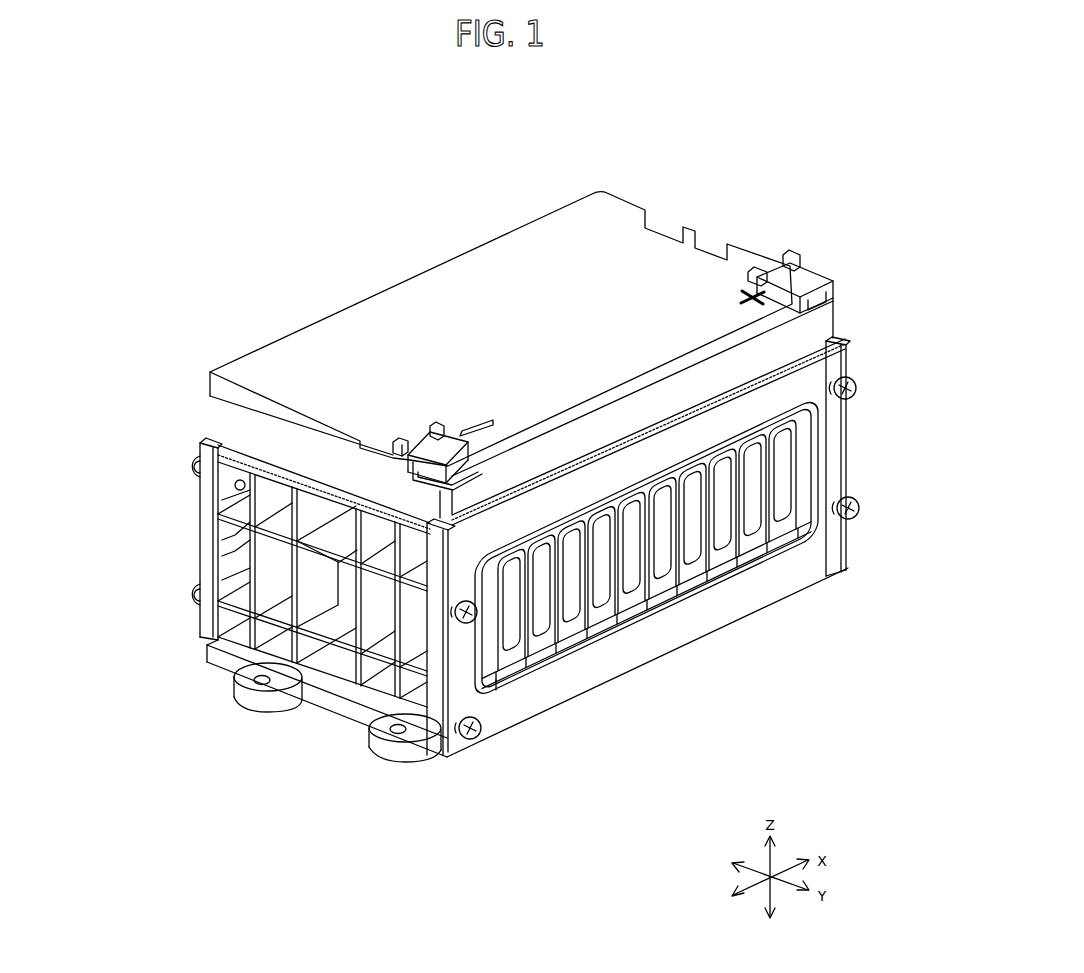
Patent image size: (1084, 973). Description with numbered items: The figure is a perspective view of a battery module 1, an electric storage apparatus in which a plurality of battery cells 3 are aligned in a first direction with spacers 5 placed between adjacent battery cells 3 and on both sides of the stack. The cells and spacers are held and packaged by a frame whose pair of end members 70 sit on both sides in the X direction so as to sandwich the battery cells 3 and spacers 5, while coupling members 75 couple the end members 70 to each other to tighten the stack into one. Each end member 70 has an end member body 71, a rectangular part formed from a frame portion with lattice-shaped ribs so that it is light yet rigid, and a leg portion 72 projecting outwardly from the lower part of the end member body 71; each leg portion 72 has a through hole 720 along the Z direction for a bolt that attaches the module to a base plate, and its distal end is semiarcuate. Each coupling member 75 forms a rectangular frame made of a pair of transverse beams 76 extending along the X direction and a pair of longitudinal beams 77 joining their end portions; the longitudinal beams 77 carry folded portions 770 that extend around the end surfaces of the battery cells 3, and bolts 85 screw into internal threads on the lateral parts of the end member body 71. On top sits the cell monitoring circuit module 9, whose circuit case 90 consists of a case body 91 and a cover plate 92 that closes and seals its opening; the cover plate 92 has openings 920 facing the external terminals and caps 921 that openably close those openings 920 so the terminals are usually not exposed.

The battery module 1 is at (685, 139).
The cell monitoring circuit module 9 is at (512, 355).
The circuit case 90 is at (128, 352).
The cover plate 92 is at (230, 376).
The case body 91 is at (232, 418).
The openings 920 is at (400, 478).
The caps 921 is at (450, 440).
The coupling members 75 is at (178, 530).
The transverse beams 76 is at (797, 383).
The longitudinal beams 77 is at (836, 460).
The folded portions 770 is at (205, 565).
The bolt 85 is at (188, 466).
The end members 70 is at (312, 726).
The end member body 71 is at (318, 695).
The leg portion 72 is at (252, 698).
The through hole 720 is at (260, 680).
The spacers 5 is at (512, 645).
The battery cells 3 is at (520, 665).